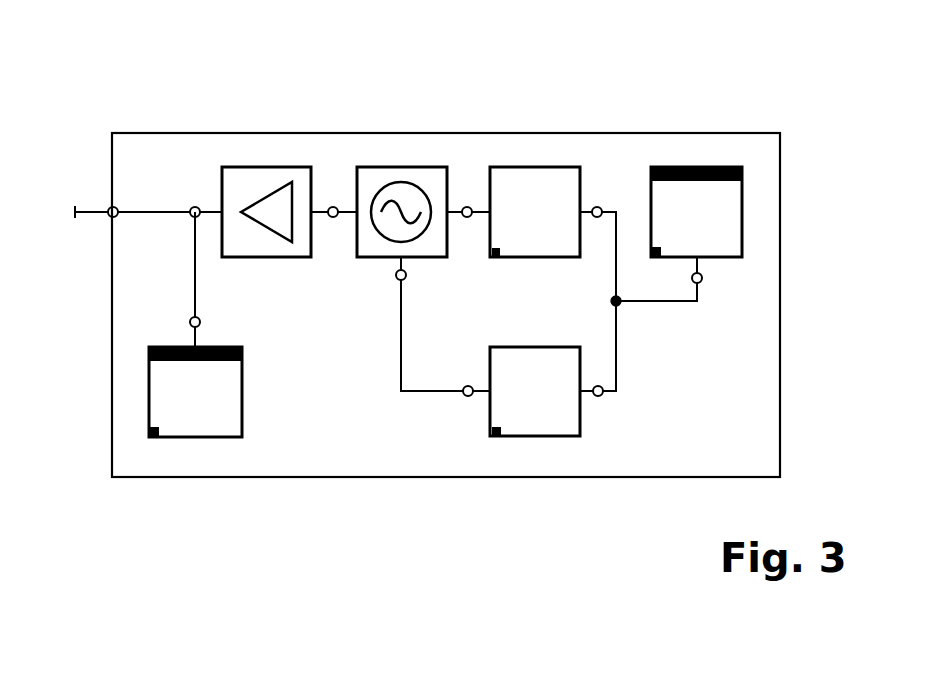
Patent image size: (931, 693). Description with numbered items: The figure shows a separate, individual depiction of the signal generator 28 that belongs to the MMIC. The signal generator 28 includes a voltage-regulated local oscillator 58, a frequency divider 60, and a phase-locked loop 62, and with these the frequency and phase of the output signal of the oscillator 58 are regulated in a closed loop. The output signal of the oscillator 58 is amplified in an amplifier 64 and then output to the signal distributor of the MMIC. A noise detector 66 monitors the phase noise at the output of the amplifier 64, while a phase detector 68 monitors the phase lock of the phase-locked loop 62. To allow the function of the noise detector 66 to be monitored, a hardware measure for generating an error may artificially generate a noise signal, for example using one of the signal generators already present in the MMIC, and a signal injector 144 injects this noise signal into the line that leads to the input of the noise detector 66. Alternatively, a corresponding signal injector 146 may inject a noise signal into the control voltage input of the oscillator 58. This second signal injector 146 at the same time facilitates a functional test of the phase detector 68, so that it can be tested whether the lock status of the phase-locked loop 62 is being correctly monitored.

The signal generator 28 is at (526, 98).
The signal injector 144 is at (192, 287).
The amplifier 64 is at (267, 167).
The voltage-regulated local oscillator 58 is at (401, 167).
The signal injector 146 is at (471, 206).
The phase-locked loop 62 is at (560, 167).
The phase detector 68 is at (742, 210).
The noise detector 66 is at (197, 437).
The frequency divider 60 is at (535, 436).